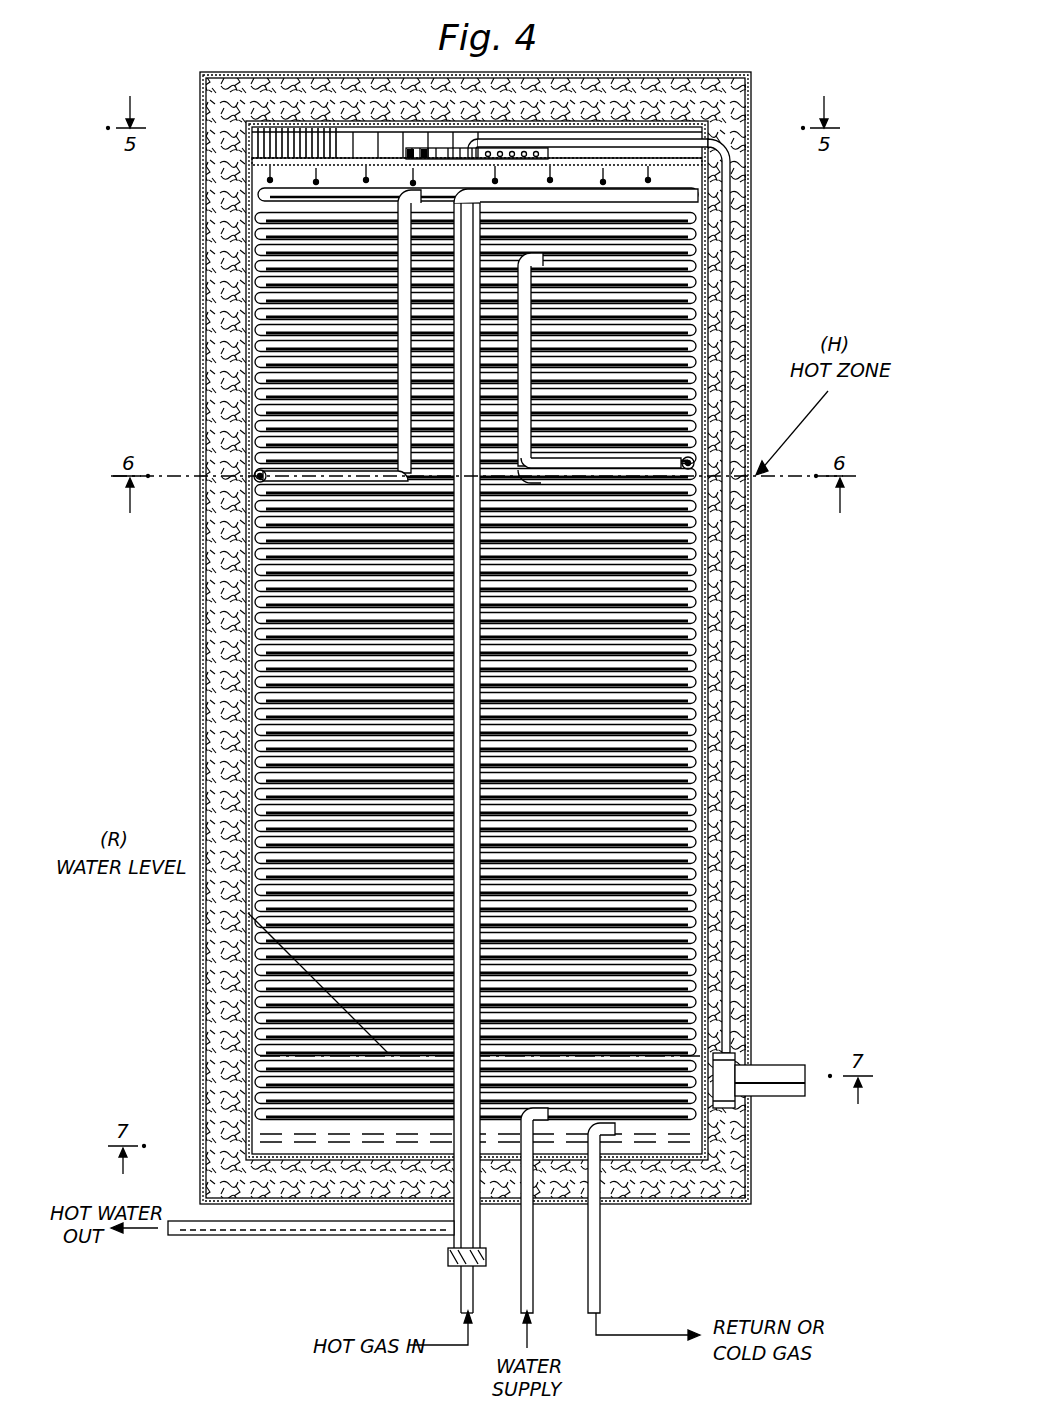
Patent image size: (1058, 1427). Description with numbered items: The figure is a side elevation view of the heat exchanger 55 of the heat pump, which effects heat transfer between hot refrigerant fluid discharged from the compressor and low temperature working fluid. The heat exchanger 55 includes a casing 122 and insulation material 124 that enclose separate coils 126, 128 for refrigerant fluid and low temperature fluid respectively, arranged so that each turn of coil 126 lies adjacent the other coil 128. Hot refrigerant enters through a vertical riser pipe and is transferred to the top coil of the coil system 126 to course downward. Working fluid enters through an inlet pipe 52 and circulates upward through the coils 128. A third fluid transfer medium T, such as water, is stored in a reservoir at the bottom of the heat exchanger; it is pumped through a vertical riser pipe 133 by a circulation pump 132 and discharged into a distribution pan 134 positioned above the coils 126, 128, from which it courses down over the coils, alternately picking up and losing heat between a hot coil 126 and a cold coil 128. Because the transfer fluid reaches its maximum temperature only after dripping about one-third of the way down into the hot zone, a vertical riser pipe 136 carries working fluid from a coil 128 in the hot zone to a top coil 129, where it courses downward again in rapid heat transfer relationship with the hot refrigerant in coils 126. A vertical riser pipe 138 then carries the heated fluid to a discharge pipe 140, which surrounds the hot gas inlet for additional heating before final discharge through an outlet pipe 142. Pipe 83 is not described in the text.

The heat exchanger 55 is at (756, 584).
The casing 122 is at (743, 733).
The insulation material 124 is at (727, 770).
The coil for refrigerant fluid 126 is at (690, 688).
The coil for low temperature fluid 128 is at (300, 460).
The top coil 129 is at (290, 185).
The circulation pump 132 is at (770, 1055).
The vertical riser pipe 133 is at (713, 893).
The distribution pan 134 is at (605, 150).
The vertical riser pipe 136 is at (395, 262).
The vertical riser pipe 138 is at (545, 335).
The discharge pipe 140 is at (528, 268).
The outlet pipe 142 is at (240, 1230).
The inlet pipe 52 is at (522, 1240).
The return / cold gas pipe 83 is at (595, 1262).
The third fluid transfer medium T is at (670, 165).